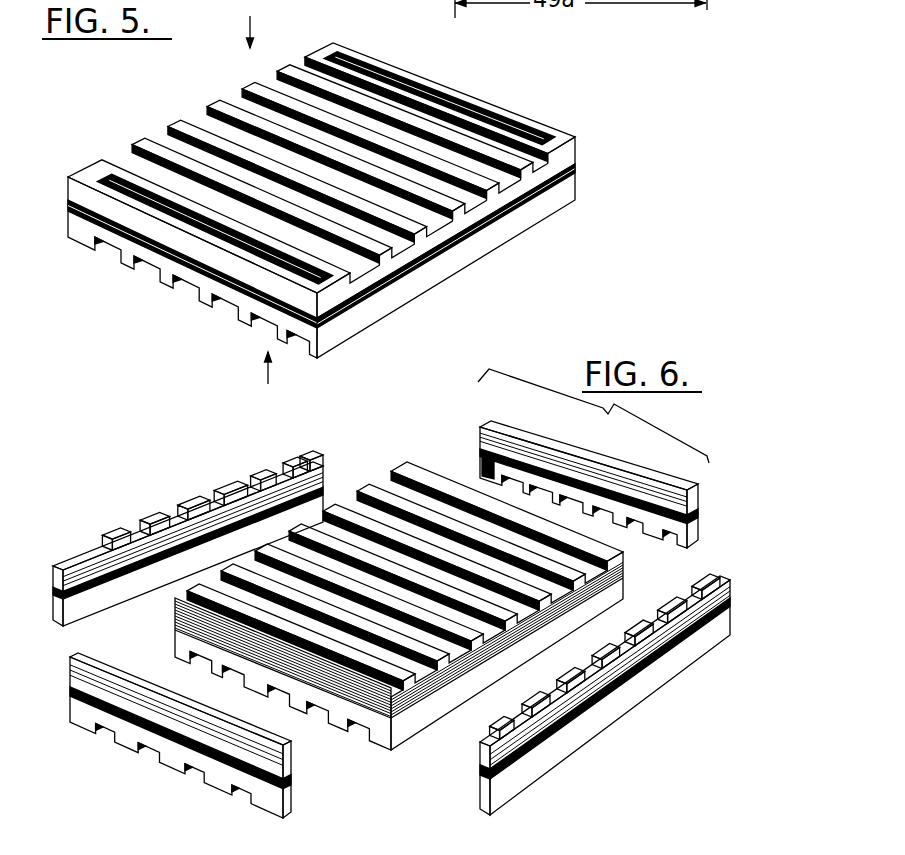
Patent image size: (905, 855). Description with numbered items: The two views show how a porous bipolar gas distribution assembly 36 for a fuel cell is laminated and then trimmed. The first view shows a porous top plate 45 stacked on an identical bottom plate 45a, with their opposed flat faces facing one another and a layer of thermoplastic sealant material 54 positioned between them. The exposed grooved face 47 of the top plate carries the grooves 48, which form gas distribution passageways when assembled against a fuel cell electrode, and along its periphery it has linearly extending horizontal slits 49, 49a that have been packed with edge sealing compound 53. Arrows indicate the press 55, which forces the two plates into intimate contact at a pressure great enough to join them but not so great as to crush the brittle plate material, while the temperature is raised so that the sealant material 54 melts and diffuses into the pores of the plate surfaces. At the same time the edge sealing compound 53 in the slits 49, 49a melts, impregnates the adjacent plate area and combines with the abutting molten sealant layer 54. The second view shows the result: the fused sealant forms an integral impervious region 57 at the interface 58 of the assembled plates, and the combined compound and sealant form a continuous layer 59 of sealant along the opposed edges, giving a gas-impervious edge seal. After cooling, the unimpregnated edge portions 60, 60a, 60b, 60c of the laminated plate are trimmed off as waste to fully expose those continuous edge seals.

In FIG. 6, the bipolar gas distribution assembly 36 is at (409, 598).
In FIG. 5, the porous top plate 45 is at (340, 202).
In FIG. 6, the porous top plate 45 is at (435, 632).
In FIG. 5, the bottom plate 45a is at (331, 259).
In FIG. 6, the bottom plate 45a is at (399, 677).
In FIG. 5, the grooved face 47 is at (318, 138).
In FIG. 5, the grooves 48 is at (248, 176).
In FIG. 5, the peripheral slit 49 is at (209, 236).
In FIG. 5, the peripheral slit 49a is at (440, 102).
In FIG. 5, the edge sealing compound 53 is at (326, 193).
In FIG. 5, the layer of thermoplastic sealant material 54 is at (302, 246).
In FIG. 6, the layer of thermoplastic sealant material 54 is at (399, 619).
In FIG. 5, the press 55 is at (257, 202).
In FIG. 6, the integral impervious region 57 is at (423, 630).
In FIG. 5, the interface 58 is at (470, 239).
In FIG. 6, the continuous layer of sealant 59 is at (283, 689).
In FIG. 6, the unimpregnated edge portion 60 is at (614, 694).
In FIG. 6, the unimpregnated edge portion 60a is at (589, 484).
In FIG. 6, the unimpregnated edge portion 60b is at (188, 538).
In FIG. 6, the unimpregnated edge portion 60c is at (180, 735).